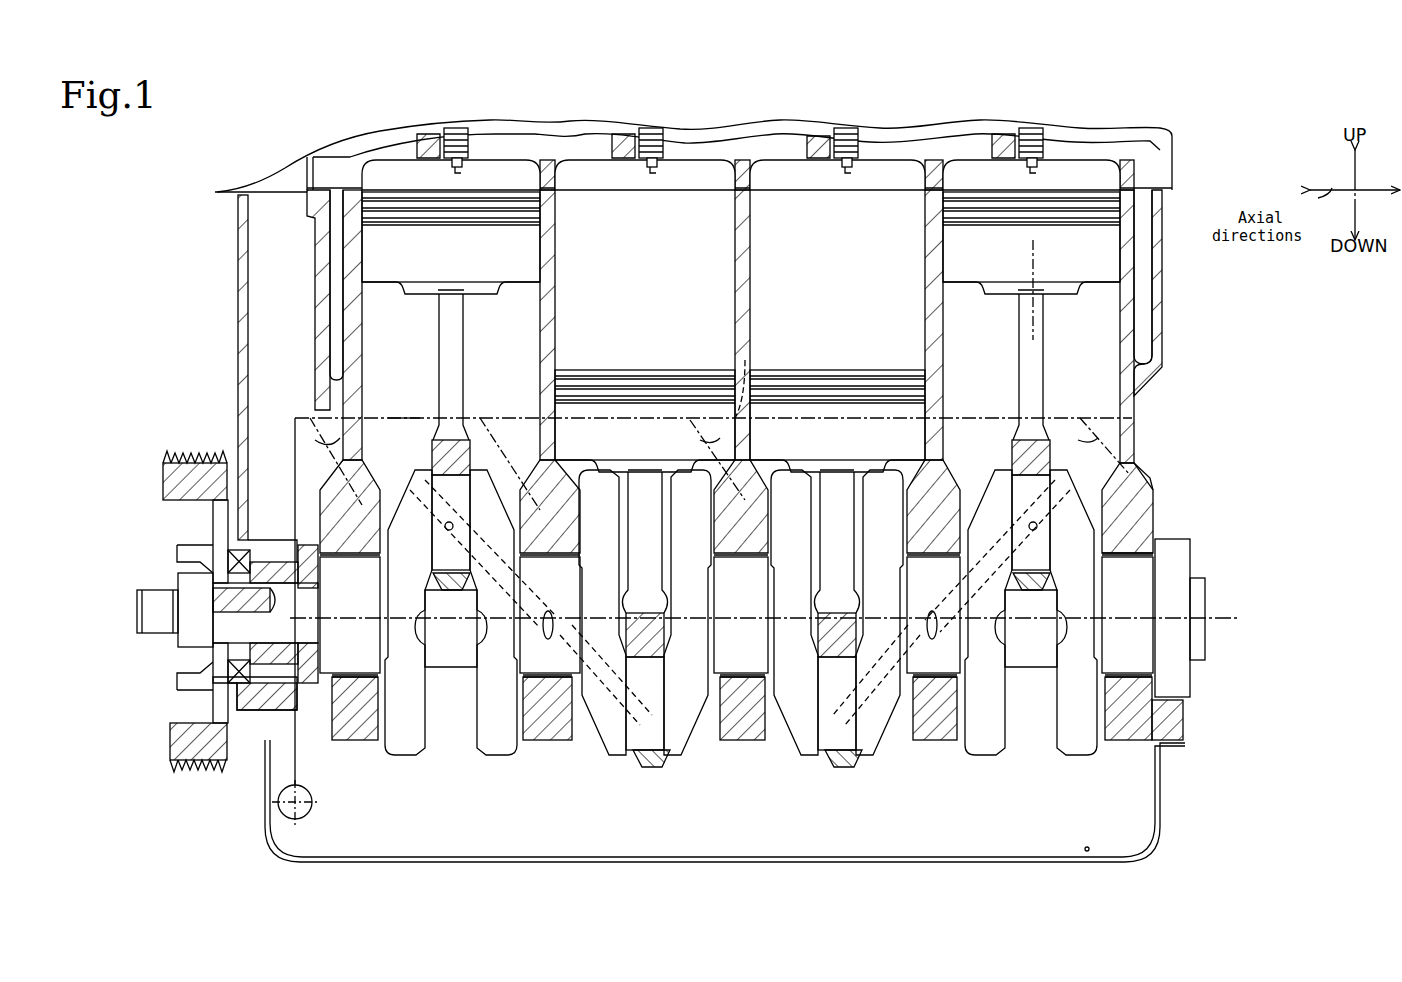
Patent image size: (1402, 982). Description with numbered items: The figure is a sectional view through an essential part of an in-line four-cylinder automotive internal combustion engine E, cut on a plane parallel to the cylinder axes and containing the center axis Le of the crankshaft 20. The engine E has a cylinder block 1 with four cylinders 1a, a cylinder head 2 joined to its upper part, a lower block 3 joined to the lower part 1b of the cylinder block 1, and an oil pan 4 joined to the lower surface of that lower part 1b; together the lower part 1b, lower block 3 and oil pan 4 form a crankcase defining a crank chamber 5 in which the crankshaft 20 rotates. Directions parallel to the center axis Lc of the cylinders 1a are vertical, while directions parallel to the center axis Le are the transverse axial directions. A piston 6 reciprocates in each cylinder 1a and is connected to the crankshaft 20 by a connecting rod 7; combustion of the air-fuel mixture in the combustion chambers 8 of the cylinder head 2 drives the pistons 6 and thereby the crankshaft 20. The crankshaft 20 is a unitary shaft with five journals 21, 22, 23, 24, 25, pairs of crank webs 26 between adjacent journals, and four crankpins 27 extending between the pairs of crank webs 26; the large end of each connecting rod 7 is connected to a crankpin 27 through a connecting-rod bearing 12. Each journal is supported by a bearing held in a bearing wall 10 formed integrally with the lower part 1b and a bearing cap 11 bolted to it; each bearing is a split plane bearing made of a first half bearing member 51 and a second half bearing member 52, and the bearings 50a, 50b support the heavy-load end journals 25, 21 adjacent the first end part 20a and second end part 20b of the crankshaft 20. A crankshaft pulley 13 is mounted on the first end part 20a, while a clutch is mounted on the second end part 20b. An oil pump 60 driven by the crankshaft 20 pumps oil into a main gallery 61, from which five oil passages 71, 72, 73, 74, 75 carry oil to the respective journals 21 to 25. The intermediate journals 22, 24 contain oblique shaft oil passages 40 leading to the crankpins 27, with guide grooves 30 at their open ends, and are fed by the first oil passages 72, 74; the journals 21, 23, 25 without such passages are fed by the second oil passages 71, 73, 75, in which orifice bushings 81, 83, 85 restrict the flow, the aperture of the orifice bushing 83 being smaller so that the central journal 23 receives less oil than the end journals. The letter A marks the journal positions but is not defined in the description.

The cylinder block 1 is at (1180, 402).
The cylinder 1a is at (352, 243).
The lower part of the cylinder block 1b is at (1158, 476).
The cylinder head 2 is at (1163, 158).
The lower block 3 is at (1180, 718).
The oil pan 4 is at (1162, 782).
The crank chamber 5 is at (600, 468).
The piston 6 is at (530, 244).
The connecting rod 7 is at (460, 330).
The combustion chamber 8 is at (494, 186).
The bearing wall 10 is at (370, 508).
The bearing cap 11 is at (360, 715).
The connecting-rod bearing 12 is at (452, 602).
The crankshaft pulley 13 is at (190, 450).
The crankshaft 20 is at (602, 775).
The first end part of the crankshaft 20a is at (195, 640).
The second end part of the crankshaft 20b is at (1200, 610).
The journal 21 is at (1096, 670).
The journal 22 is at (968, 660).
The journal 23 is at (710, 640).
The journal 24 is at (478, 650).
The journal 25 is at (392, 672).
The crank web 26 is at (608, 478).
The crankpin 27 is at (466, 545).
The guide groove 30 is at (540, 618).
The shaft oil passage 40 is at (440, 560).
The bearing 50a is at (325, 785).
The bearing 50b is at (1150, 555).
The first half bearing member 51 is at (305, 548).
The second half bearing member 52 is at (352, 690).
The oil pump 60 is at (275, 812).
The main gallery 61 is at (400, 412).
The oil passage 71 is at (1168, 442).
The oil passage 72 is at (845, 420).
The oil passage 73 is at (690, 420).
The oil passage 74 is at (488, 418).
The oil passage 75 is at (300, 455).
The orifice bushing 81 is at (1073, 430).
The orifice bushing 83 is at (745, 360).
The orifice bushing 85 is at (330, 430).
The main journal A is at (380, 610).
The internal combustion engine E is at (190, 230).
The center axis of the cylinders Lc is at (1040, 258).
The center axis of the crankshaft Le is at (1215, 625).